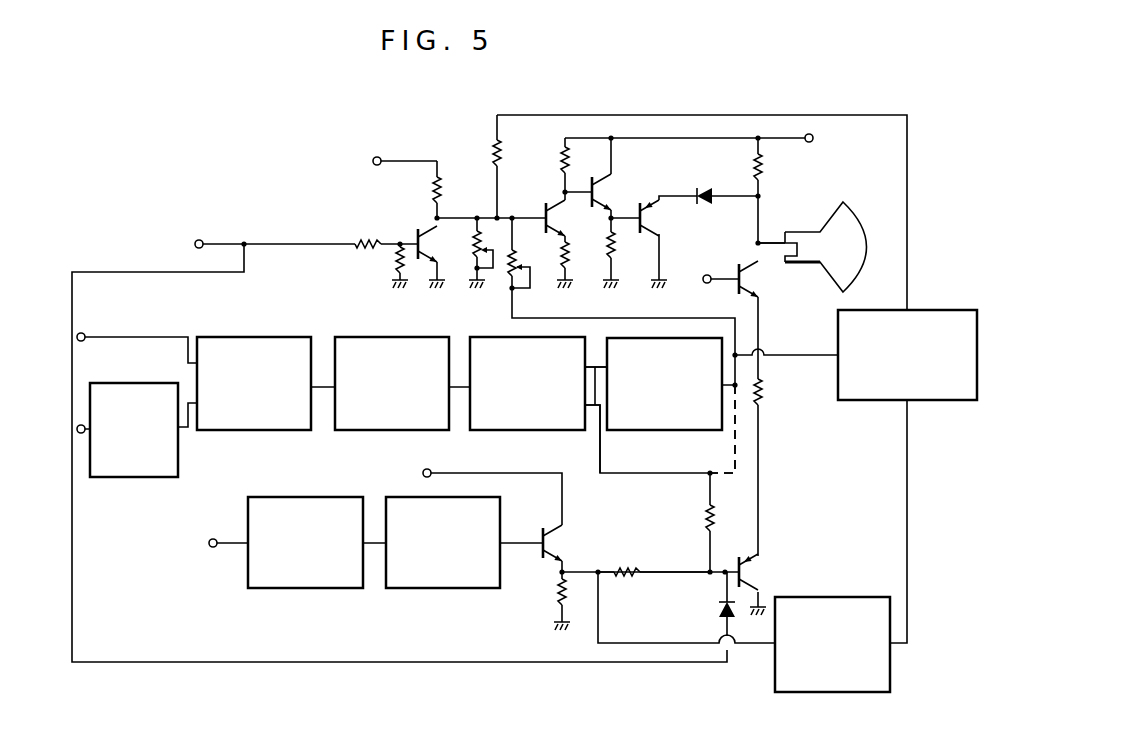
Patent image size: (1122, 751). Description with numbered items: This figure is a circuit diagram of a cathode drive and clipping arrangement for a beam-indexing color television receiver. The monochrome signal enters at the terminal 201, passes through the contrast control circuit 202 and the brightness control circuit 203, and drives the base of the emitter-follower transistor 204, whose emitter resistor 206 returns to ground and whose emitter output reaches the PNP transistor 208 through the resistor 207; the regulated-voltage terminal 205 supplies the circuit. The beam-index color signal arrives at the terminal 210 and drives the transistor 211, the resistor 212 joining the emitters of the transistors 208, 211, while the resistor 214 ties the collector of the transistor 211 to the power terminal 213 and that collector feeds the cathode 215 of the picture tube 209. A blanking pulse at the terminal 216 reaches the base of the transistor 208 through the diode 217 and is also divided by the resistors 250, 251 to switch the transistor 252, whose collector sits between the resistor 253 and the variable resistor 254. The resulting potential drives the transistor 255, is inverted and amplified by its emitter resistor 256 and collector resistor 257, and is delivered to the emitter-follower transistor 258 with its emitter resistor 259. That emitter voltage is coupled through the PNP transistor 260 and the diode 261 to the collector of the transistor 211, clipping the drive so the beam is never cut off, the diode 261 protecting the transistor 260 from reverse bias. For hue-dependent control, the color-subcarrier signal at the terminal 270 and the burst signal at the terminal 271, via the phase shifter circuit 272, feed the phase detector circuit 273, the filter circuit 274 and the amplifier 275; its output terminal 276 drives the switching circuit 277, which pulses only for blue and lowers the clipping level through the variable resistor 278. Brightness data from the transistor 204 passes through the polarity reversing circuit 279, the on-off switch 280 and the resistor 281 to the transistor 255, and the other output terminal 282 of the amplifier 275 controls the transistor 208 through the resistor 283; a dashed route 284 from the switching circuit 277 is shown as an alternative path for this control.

The terminal 201 is at (213, 538).
The contrast control circuit 202 is at (298, 497).
The brightness control circuit 203 is at (503, 516).
The emitter-follower transistor 204 is at (562, 553).
The regulated-voltage terminal 205 is at (373, 158).
The emitter resistor 206 is at (556, 598).
The resistor 207 is at (628, 565).
The PNP transistor 208 is at (762, 568).
The picture tube 209 is at (858, 200).
The terminal 210 is at (707, 275).
The transistor 211 is at (762, 290).
The resistor 212 is at (765, 392).
The power terminal 213 is at (813, 138).
The resistor 214 is at (764, 170).
The cathode 215 is at (775, 241).
The terminal 216 is at (199, 240).
The diode 217 is at (718, 610).
The resistor 250 is at (365, 238).
The resistor 251 is at (395, 258).
The transistor 252 is at (418, 232).
The resistor 253 is at (437, 178).
The variable resistor 254 is at (480, 240).
The transistor 255 is at (546, 208).
The emitter resistor 256 is at (572, 258).
The collector resistor 257 is at (566, 152).
The emitter-follower transistor 258 is at (598, 190).
The emitter resistor 259 is at (618, 250).
The PNP transistor 260 is at (660, 222).
The diode 261 is at (700, 186).
The terminal 270 is at (85, 333).
The terminal 271 is at (81, 433).
The phase shifter circuit 272 is at (143, 383).
The phase detector circuit 273 is at (267, 337).
The filter circuit 274 is at (387, 337).
The amplifier 275 is at (510, 431).
The output terminal 276 is at (597, 408).
The switching circuit 277 is at (662, 431).
The variable resistor 278 is at (507, 265).
The polarity reversing circuit 279 is at (860, 597).
The on-off switch 280 is at (935, 310).
The resistor 281 is at (500, 162).
The output terminal 282 is at (592, 410).
The resistor 283 is at (703, 515).
The control line 284 is at (737, 445).